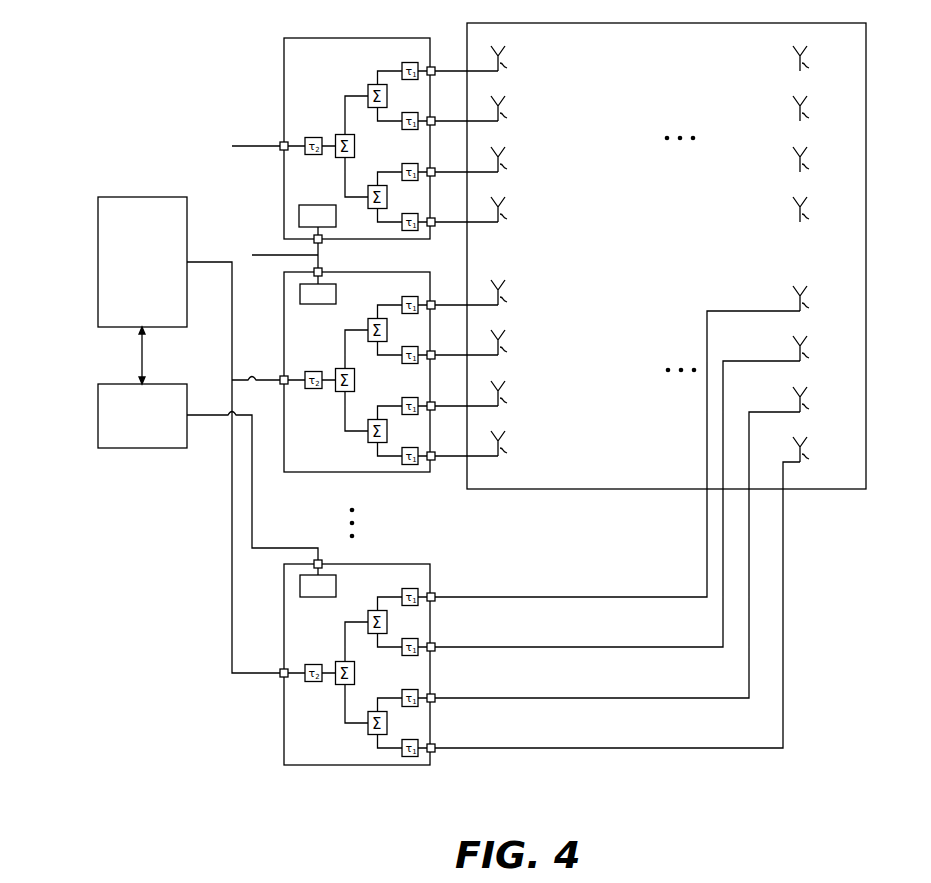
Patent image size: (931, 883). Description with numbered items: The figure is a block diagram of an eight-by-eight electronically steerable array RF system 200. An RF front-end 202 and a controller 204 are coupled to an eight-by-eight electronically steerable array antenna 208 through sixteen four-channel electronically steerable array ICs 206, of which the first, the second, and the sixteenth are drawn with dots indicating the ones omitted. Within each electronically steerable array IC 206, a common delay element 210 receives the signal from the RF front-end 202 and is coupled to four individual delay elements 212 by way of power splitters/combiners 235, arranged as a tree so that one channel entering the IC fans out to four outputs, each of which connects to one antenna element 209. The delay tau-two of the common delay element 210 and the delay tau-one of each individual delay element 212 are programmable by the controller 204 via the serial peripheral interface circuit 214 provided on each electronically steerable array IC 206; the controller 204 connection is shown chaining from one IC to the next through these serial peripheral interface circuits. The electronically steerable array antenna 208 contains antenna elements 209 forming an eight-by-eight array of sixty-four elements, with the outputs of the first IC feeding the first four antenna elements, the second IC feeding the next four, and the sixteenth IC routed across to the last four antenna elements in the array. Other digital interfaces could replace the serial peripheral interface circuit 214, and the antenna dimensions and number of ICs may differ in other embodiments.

The electronically steerable array RF system 200 is at (94, 53).
The RF front-end 202 is at (98, 219).
The controller 204 is at (98, 394).
The electronically steerable array IC 206 is at (284, 72).
The electronically steerable array antenna 208 is at (584, 491).
The antenna element 209 is at (670, 260).
The common delay element 210 is at (323, 138).
The individual delay element 212 is at (403, 64).
The serial peripheral interface (SPI) circuit 214 is at (320, 205).
The power splitter/combiner 235 is at (368, 86).